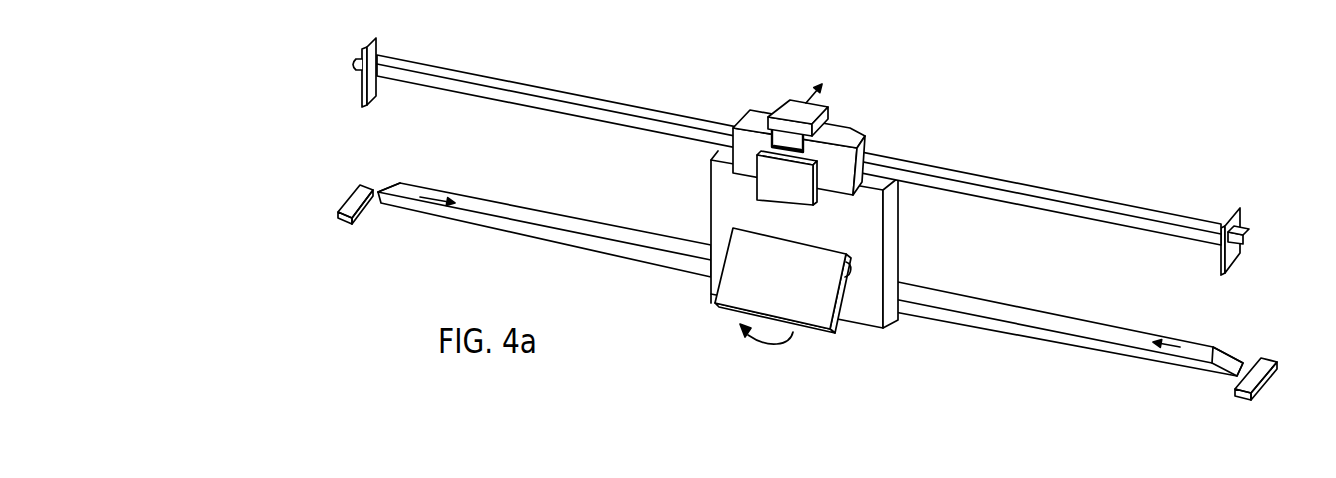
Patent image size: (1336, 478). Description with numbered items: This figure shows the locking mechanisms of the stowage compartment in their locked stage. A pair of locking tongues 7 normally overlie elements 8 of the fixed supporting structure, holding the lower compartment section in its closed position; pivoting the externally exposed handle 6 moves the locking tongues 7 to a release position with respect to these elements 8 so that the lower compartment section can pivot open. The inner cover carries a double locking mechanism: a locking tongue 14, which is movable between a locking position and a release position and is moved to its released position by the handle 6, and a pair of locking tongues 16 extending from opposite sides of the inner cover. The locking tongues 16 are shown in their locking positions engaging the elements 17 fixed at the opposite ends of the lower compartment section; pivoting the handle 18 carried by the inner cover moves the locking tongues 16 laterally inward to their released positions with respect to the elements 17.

The handle 6 is at (713, 304).
The locking tongues 7 is at (388, 211).
The elements of the fixed supporting structure 8 is at (338, 220).
The locking tongue 14 is at (797, 143).
The locking tongues 16 is at (357, 60).
The elements 17 is at (1276, 268).
The handle 18 is at (767, 173).